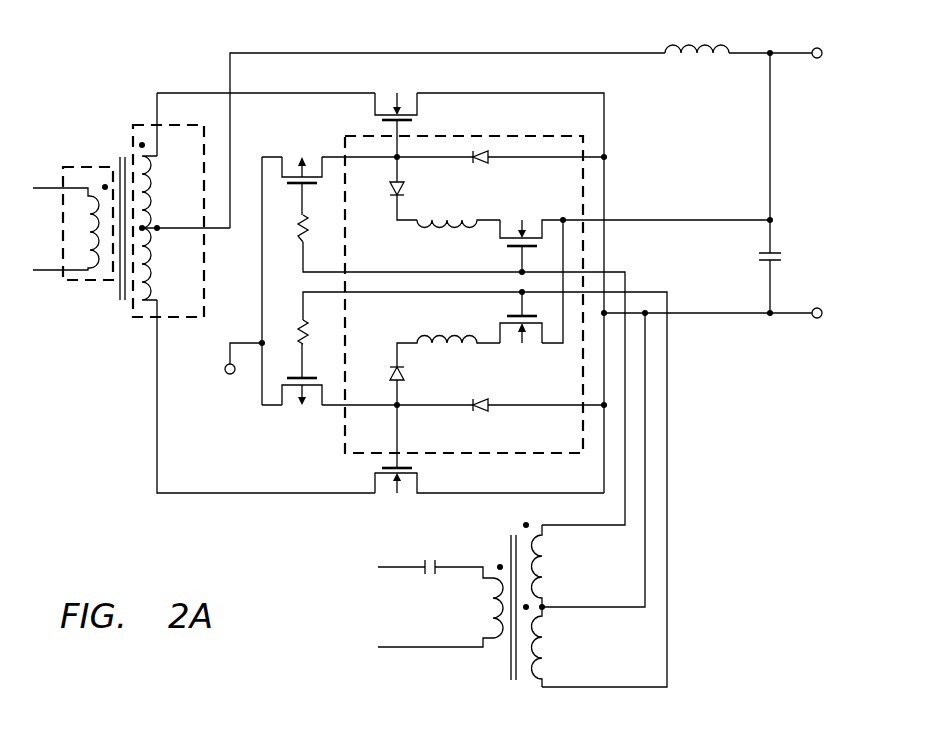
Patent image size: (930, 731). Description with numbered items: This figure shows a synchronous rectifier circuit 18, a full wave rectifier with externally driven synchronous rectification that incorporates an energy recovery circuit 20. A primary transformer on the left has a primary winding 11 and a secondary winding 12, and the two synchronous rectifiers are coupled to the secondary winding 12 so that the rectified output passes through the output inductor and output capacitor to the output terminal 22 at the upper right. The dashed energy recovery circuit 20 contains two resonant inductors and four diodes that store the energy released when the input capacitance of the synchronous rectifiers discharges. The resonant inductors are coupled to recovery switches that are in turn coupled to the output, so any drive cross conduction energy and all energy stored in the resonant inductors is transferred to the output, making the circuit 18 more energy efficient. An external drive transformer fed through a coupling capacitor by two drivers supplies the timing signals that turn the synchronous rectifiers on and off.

The primary winding 11 is at (90, 281).
The secondary winding 12 is at (142, 318).
The synchronous rectifier circuit 18 is at (147, 538).
The energy recovery circuit 20 is at (538, 442).
The output terminal 22 is at (789, 52).